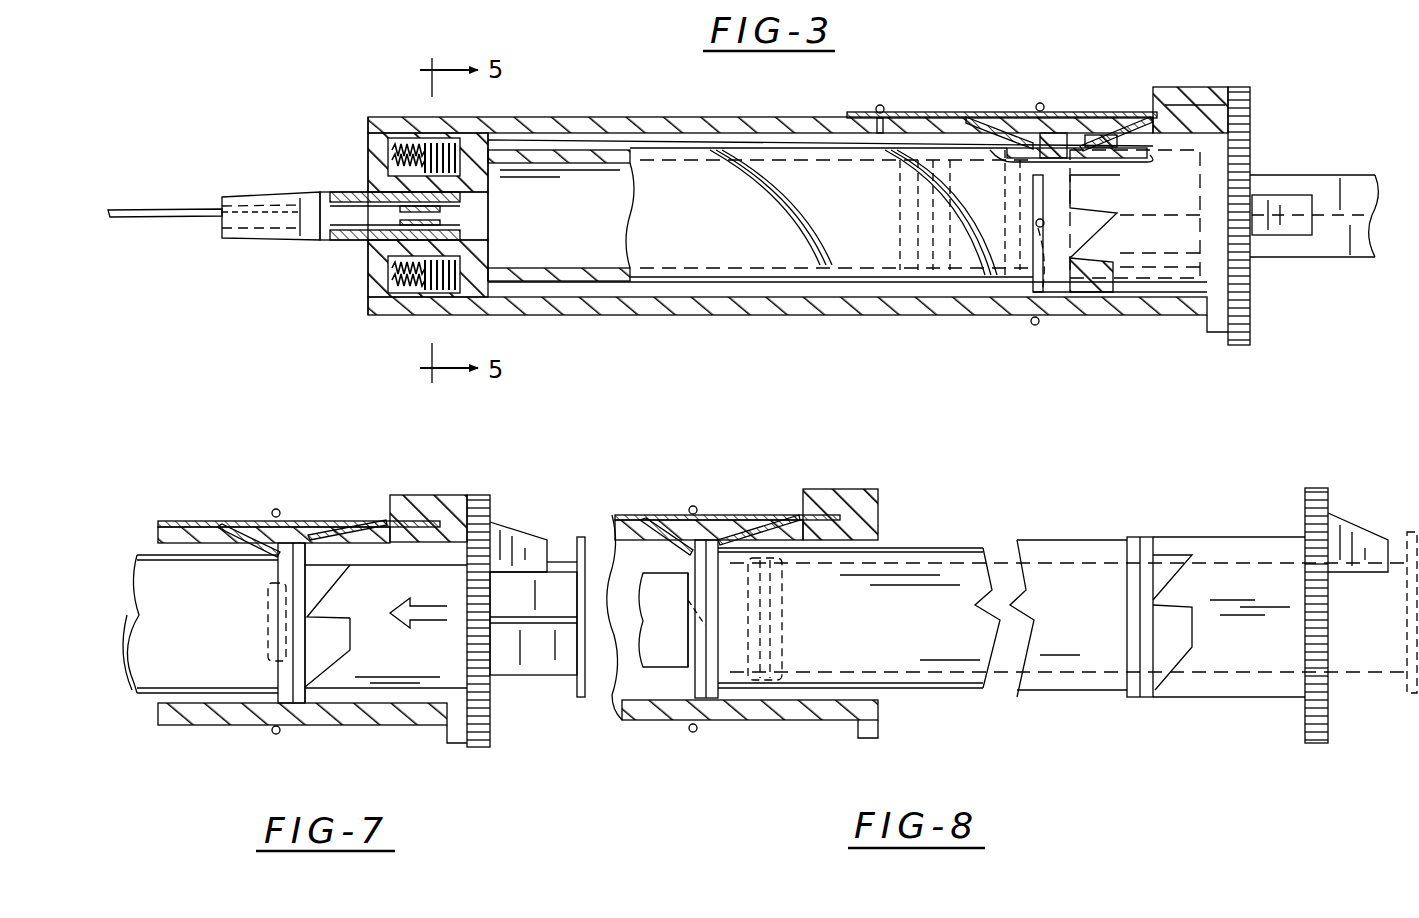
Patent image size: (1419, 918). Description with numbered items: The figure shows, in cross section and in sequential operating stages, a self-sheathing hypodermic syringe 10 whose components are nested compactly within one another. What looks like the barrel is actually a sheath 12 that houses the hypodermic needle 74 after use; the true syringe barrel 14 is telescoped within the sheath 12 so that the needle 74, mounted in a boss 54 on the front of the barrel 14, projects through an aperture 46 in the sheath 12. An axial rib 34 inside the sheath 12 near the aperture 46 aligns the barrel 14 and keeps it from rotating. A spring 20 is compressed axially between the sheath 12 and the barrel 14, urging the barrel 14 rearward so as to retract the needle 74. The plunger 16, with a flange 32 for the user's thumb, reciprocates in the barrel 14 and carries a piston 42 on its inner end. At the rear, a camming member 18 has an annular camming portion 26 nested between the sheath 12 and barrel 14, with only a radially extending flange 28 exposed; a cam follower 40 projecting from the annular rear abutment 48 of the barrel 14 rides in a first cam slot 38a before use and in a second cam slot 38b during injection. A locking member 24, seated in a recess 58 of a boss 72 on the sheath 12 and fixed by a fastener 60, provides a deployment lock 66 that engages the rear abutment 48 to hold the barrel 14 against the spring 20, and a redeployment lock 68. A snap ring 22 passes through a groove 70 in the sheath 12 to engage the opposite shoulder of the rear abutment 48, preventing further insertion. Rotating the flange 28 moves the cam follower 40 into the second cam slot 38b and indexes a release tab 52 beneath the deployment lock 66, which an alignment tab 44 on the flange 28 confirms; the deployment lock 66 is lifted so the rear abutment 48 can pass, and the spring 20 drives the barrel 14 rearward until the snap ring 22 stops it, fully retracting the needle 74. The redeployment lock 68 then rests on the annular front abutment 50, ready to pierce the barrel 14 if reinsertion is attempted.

In FIG. 3, the self-sheathing hypodermic syringe 10 is at (1003, 88).
In FIG. 3, the sheath 12 is at (603, 316).
In FIG. 7, the sheath 12 is at (236, 722).
In FIG. 8, the sheath 12 is at (712, 722).
In FIG. 3, the syringe barrel 14 is at (726, 283).
In FIG. 7, the syringe barrel 14 is at (215, 694).
In FIG. 8, the syringe barrel 14 is at (920, 690).
In FIG. 3, the plunger 16 is at (1333, 174).
In FIG. 7, the plunger 16 is at (540, 608).
In FIG. 8, the plunger 16 is at (1128, 613).
In FIG. 3, the camming member 18 is at (1275, 248).
In FIG. 8, the camming member 18 is at (1189, 628).
In FIG. 3, the spring 20 is at (412, 290).
In FIG. 3, the snap ring 22 is at (1040, 103).
In FIG. 7, the snap ring 22 is at (274, 508).
In FIG. 8, the snap ring 22 is at (696, 507).
In FIG. 3, the locking member 24 is at (915, 110).
In FIG. 3, the annular camming portion 26 is at (1135, 214).
In FIG. 7, the annular camming portion 26 is at (343, 672).
In FIG. 8, the annular camming portion 26 is at (1255, 538).
In FIG. 3, the flange 28 is at (1242, 346).
In FIG. 7, the flange 28 is at (478, 748).
In FIG. 8, the flange 28 is at (1316, 745).
In FIG. 7, the flange 32 is at (582, 700).
In FIG. 8, the flange 32 is at (1416, 708).
In FIG. 3, the axial rib 34 is at (510, 132).
In FIG. 3, the first cam slot 38a is at (1085, 236).
In FIG. 7, the first cam slot 38a is at (330, 586).
In FIG. 8, the first cam slot 38a is at (1170, 560).
In FIG. 7, the second cam slot 38b is at (346, 641).
In FIG. 8, the second cam slot 38b is at (1176, 652).
In FIG. 3, the cam follower 40 is at (1100, 262).
In FIG. 7, the cam follower 40 is at (330, 620).
In FIG. 8, the cam follower 40 is at (1160, 630).
In FIG. 3, the piston 42 is at (905, 272).
In FIG. 8, the piston 42 is at (772, 692).
In FIG. 7, the alignment tab 44 is at (520, 535).
In FIG. 8, the alignment tab 44 is at (1350, 526).
In FIG. 3, the aperture 46 is at (366, 256).
In FIG. 3, the annular rear abutment 48 is at (1052, 150).
In FIG. 7, the annular rear abutment 48 is at (293, 545).
In FIG. 8, the annular rear abutment 48 is at (1136, 692).
In FIG. 8, the annular front abutment 50 is at (680, 670).
In FIG. 3, the release tab 52 is at (1102, 194).
In FIG. 7, the release tab 52 is at (277, 563).
In FIG. 8, the release tab 52 is at (1140, 540).
In FIG. 3, the boss 54 is at (346, 244).
In FIG. 3, the recess 58 is at (1162, 100).
In FIG. 3, the fastener 60 is at (876, 106).
In FIG. 3, the deployment lock 66 is at (1105, 115).
In FIG. 7, the deployment lock 66 is at (322, 522).
In FIG. 8, the deployment lock 66 is at (735, 520).
In FIG. 3, the redeployment lock 68 is at (1010, 118).
In FIG. 7, the redeployment lock 68 is at (265, 525).
In FIG. 8, the redeployment lock 68 is at (700, 520).
In FIG. 3, the groove 70 is at (1060, 240).
In FIG. 7, the groove 70 is at (272, 596).
In FIG. 8, the groove 70 is at (728, 692).
In FIG. 3, the boss 72 is at (1190, 90).
In FIG. 7, the boss 72 is at (420, 498).
In FIG. 8, the boss 72 is at (835, 495).
In FIG. 3, the hypodermic needle 74 is at (165, 222).